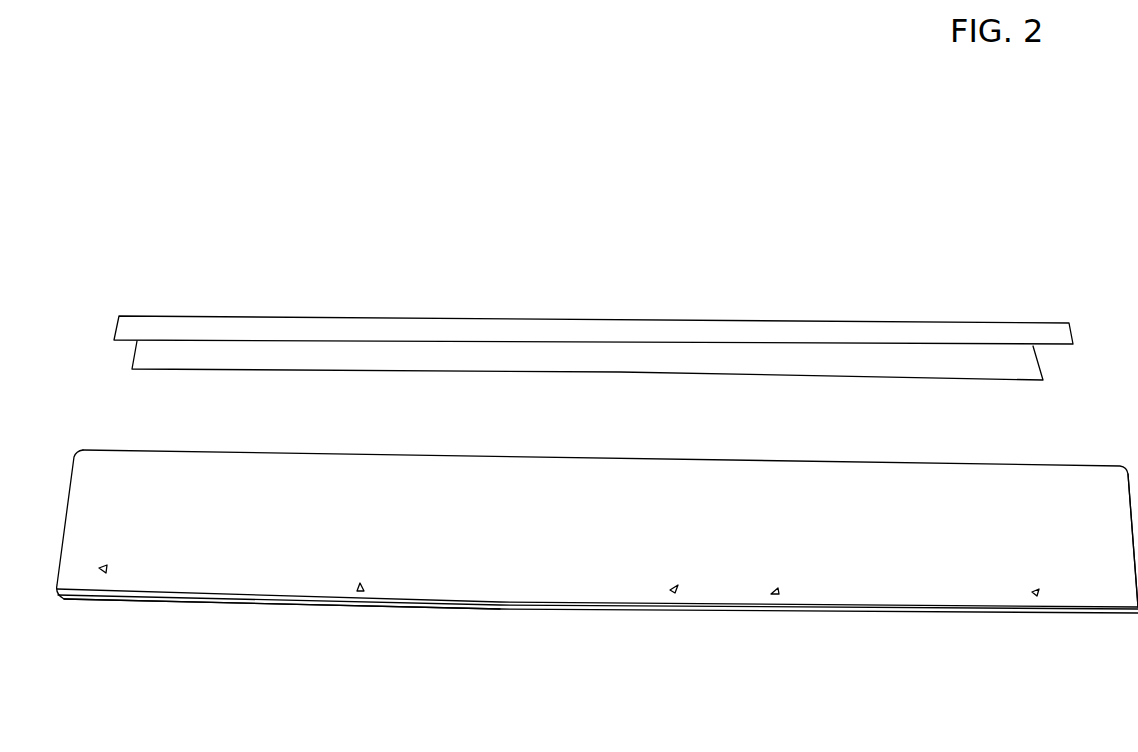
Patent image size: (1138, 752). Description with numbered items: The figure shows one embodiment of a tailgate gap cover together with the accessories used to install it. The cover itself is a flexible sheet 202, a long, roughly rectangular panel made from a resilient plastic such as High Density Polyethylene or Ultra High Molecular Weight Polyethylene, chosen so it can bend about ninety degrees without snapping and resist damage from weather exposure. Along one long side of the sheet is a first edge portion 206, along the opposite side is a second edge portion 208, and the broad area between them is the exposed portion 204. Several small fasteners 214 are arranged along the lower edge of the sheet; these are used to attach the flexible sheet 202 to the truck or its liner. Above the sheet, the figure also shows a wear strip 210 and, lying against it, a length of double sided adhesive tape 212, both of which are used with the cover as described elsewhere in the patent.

The flexible sheet 202 is at (673, 588).
The exposed portion 204 is at (192, 515).
The first edge portion 206 is at (280, 585).
The second edge portion 208 is at (897, 480).
The wear strip 210 is at (752, 330).
The double sided adhesive tape 212 is at (390, 362).
The fasteners 214 is at (110, 580).